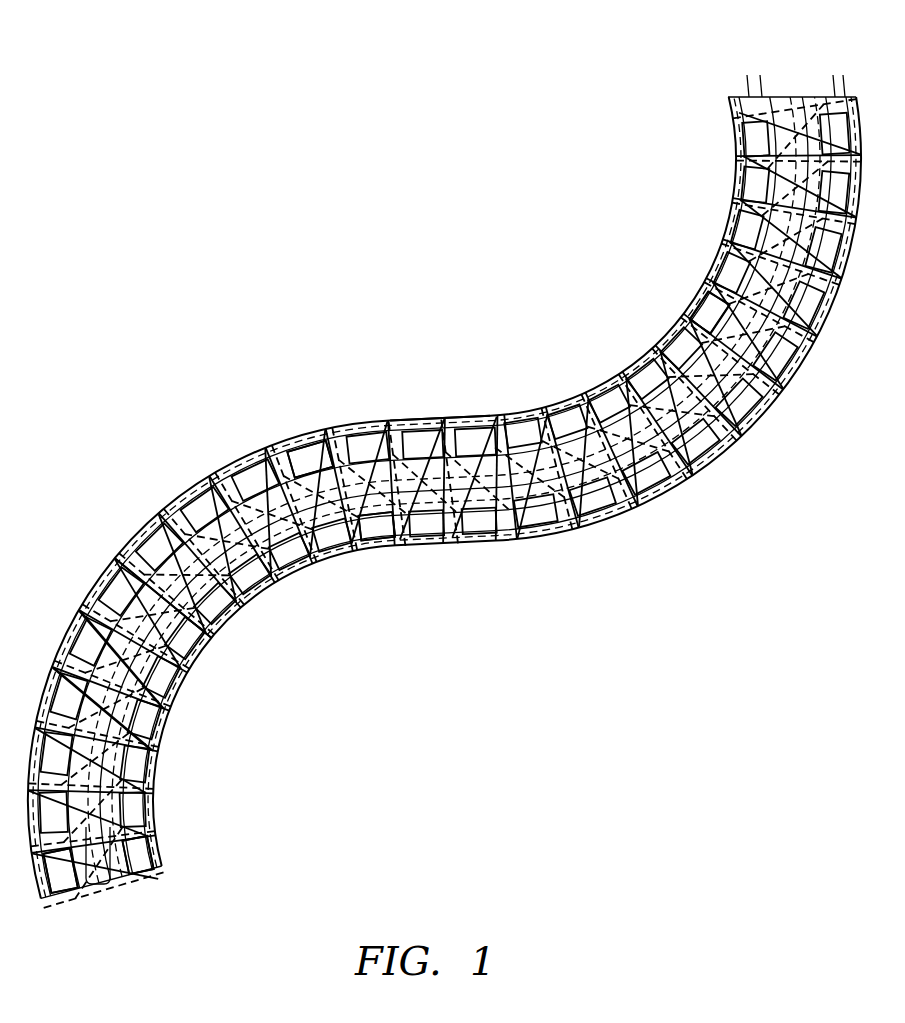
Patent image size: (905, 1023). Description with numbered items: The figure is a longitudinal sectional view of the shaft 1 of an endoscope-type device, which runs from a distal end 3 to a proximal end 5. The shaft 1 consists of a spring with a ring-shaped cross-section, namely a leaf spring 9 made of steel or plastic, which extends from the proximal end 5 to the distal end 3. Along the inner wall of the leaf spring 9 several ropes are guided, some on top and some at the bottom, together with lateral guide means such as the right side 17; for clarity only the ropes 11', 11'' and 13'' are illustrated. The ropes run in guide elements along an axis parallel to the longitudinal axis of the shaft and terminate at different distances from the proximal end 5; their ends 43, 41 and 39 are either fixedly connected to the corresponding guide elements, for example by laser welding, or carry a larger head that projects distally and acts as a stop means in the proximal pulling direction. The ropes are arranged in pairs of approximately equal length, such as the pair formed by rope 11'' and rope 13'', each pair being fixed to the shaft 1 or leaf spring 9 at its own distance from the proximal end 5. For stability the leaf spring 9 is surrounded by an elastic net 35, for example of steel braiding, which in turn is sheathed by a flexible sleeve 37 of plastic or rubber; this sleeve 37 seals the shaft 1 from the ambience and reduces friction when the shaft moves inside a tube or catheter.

The shaft 1 is at (445, 494).
The distal end 3 is at (117, 900).
The proximal end 5 is at (790, 56).
The leaf spring 9 is at (382, 497).
The rope 11' is at (692, 303).
The rope 11'' is at (304, 426).
The rope 13'' is at (387, 553).
The right-side lateral guide means 17 is at (187, 615).
The elastic net 35 is at (143, 727).
The flexible sleeve 37 is at (168, 671).
The rope end 39 is at (146, 879).
The rope end 41 is at (68, 888).
The rope end 43 is at (440, 396).